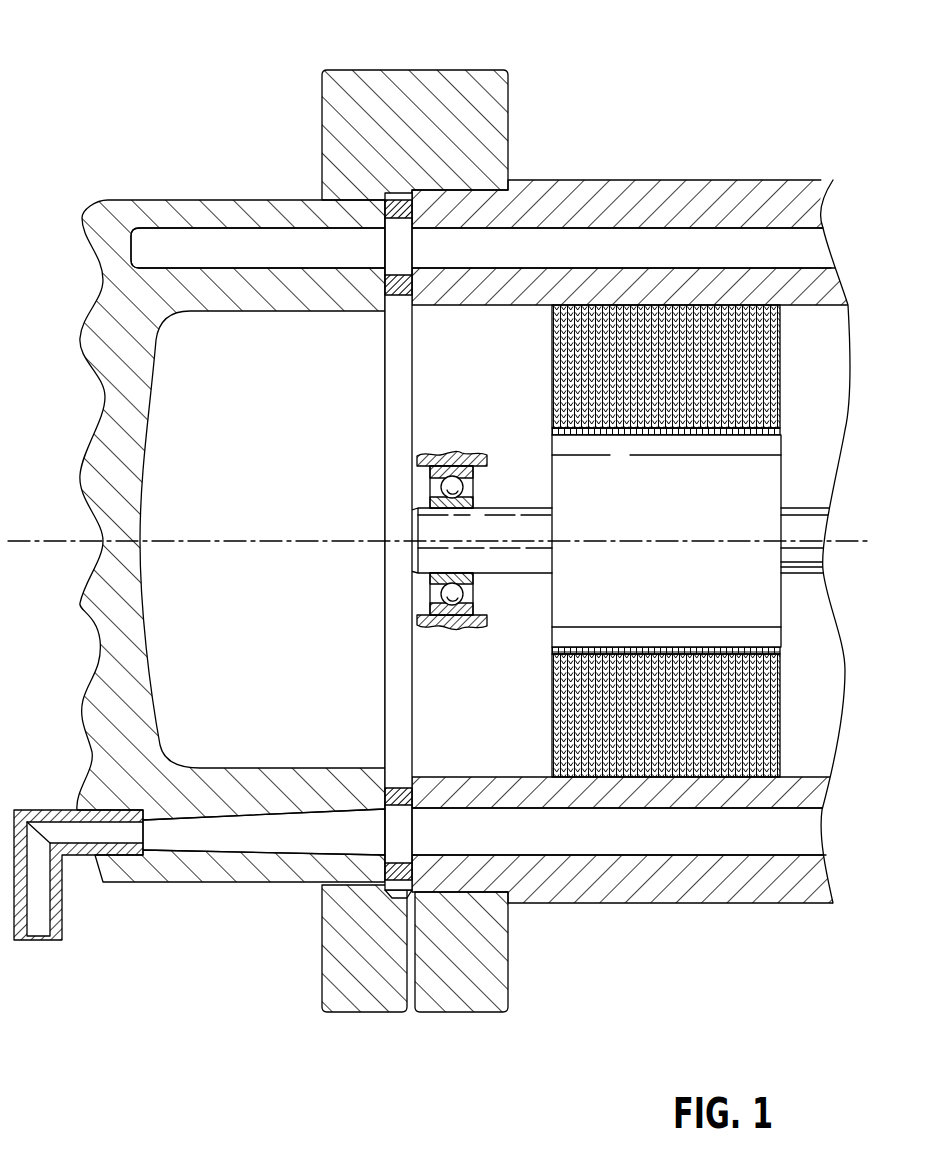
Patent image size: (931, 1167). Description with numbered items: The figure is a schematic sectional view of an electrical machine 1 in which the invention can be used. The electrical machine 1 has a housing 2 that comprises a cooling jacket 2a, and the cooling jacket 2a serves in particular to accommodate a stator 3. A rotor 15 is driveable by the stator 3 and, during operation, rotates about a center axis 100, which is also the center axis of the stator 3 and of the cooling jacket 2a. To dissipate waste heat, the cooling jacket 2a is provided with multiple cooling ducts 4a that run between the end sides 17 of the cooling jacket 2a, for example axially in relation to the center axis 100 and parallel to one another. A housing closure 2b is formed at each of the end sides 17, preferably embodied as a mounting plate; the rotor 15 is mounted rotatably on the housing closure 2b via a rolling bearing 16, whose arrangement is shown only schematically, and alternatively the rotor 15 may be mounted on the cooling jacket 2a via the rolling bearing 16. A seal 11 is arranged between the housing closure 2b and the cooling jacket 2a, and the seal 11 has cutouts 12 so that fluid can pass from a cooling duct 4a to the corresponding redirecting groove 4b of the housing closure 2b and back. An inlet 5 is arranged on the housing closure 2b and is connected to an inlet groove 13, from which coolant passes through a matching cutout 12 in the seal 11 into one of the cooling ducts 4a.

The electrical machine 1 is at (128, 80).
The housing 2 is at (553, 125).
The cooling jacket 2a is at (610, 200).
The housing closure 2b is at (258, 213).
The stator 3 is at (665, 340).
The cooling duct 4a is at (750, 248).
The redirecting groove 4b is at (188, 248).
The inlet 5 is at (58, 906).
The seal 11 is at (400, 197).
The cutout 12 is at (398, 248).
The inlet groove 13 is at (256, 836).
The rotor 15 is at (730, 497).
The rolling bearing 16 is at (430, 595).
The end side 17 is at (410, 425).
The center axis 100 is at (53, 540).